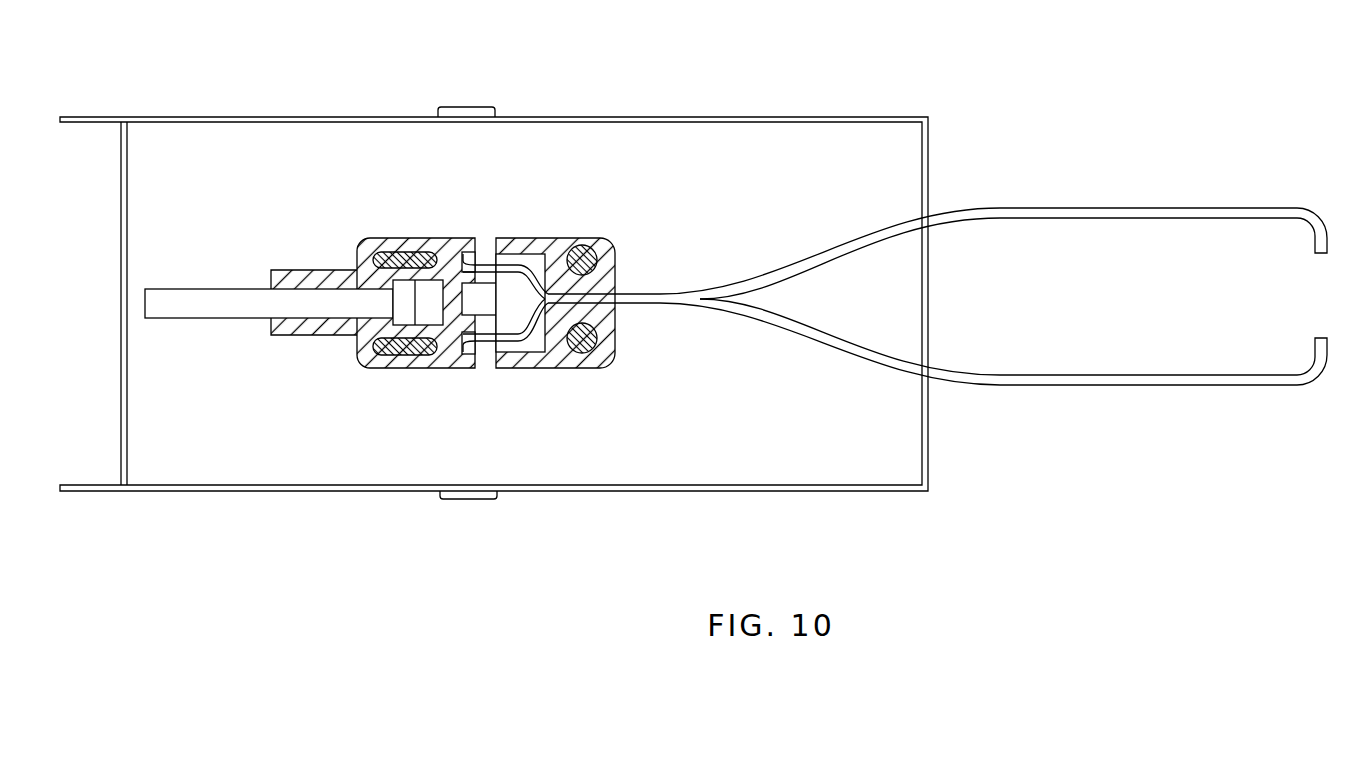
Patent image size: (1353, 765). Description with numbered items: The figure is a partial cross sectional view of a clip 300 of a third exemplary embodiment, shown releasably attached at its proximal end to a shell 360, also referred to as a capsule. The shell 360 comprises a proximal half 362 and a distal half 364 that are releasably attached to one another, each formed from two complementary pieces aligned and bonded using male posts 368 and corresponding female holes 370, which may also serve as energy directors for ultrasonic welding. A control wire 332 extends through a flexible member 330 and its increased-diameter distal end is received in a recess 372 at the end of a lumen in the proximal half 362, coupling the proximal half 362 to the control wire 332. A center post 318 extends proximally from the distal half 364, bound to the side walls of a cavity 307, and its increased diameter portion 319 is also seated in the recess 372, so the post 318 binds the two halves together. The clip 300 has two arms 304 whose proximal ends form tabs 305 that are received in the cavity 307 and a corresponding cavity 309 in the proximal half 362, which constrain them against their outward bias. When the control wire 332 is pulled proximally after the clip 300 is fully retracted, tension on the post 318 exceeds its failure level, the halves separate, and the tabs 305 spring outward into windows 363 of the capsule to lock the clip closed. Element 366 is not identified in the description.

The clip 300 is at (1011, 145).
The arms 304 is at (1170, 205).
The tabs 305 is at (488, 260).
The cavity 307 is at (515, 250).
The cavity 309 is at (435, 255).
The center post 318 is at (486, 305).
The increased diameter portion 319 is at (425, 318).
The flexible member 330 is at (103, 117).
The control wire 332 is at (192, 292).
The shell 360 is at (592, 93).
The proximal half 362 is at (383, 238).
The windows 363 is at (461, 107).
The distal half 364 is at (593, 236).
The retaining tabs 366 is at (463, 250).
The male posts 368 is at (365, 258).
The female holes 370 is at (367, 347).
The recess 372 is at (365, 367).